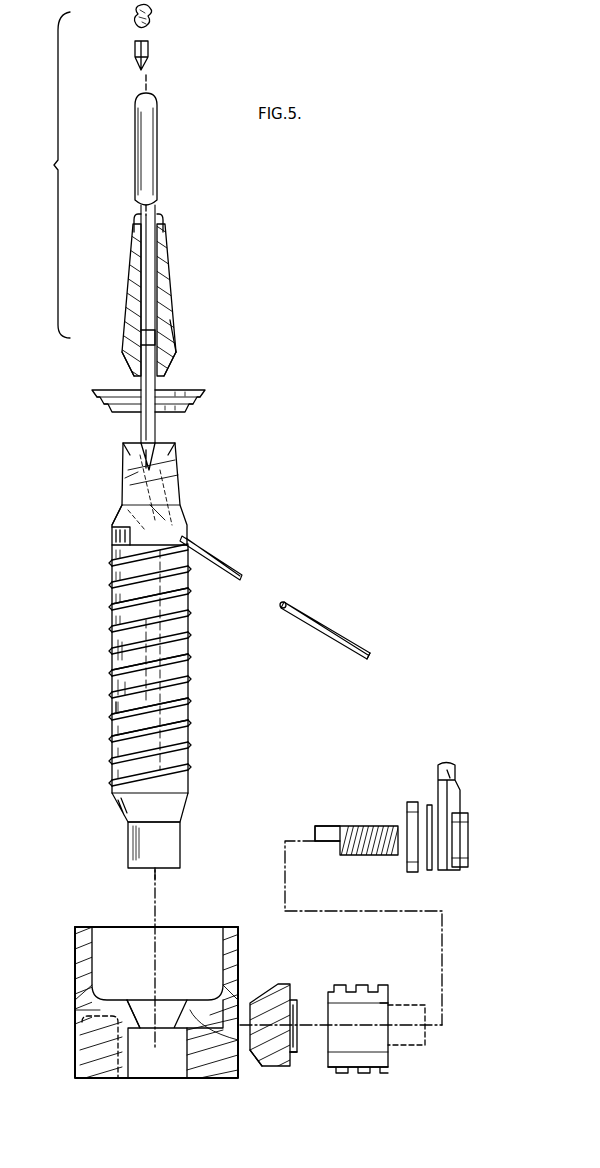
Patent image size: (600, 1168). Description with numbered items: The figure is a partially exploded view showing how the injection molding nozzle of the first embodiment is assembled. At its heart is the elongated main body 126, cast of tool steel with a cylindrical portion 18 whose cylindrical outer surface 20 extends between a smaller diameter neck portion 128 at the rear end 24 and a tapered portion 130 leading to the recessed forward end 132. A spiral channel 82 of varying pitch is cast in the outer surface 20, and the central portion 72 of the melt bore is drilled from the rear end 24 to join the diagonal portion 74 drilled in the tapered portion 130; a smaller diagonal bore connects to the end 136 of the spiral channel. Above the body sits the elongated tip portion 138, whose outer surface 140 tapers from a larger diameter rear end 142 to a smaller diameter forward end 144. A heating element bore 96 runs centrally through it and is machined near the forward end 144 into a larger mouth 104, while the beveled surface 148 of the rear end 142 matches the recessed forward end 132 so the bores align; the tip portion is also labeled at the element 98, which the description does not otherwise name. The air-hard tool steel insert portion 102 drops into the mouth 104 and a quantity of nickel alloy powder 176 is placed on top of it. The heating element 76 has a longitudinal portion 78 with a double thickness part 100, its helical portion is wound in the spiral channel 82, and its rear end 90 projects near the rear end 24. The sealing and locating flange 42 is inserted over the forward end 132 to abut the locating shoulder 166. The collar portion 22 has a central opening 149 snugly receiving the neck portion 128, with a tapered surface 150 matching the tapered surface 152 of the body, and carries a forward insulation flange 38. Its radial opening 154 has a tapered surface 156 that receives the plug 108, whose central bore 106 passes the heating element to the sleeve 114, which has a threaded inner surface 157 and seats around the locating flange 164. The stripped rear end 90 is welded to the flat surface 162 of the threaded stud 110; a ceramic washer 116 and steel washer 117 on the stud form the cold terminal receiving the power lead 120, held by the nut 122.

The nickel alloy powder 176 is at (152, 17).
The insert portion 102 is at (150, 52).
The double thickness part 100 is at (158, 152).
The mouth 104 is at (133, 218).
The forward end 144 is at (162, 222).
The left cone half 98 is at (128, 280).
The outer surface 140 is at (173, 290).
The tip portion 138 is at (174, 318).
The heating element bore 96 is at (152, 338).
The rear end 142 is at (128, 362).
The beveled surface 148 is at (167, 373).
The sealing and locating flange 42 is at (205, 402).
The tapered portion 130 is at (178, 485).
The forward end 132 is at (165, 447).
The diagonal portion 74 is at (122, 518).
The locating shoulder 166 is at (112, 537).
The end 136 is at (185, 538).
The cylindrical portion 18 is at (188, 635).
The longitudinal portion 78 is at (188, 607).
The outer surface 20 is at (190, 668).
The central portion 72 is at (148, 688).
The main body 126 is at (188, 704).
The spiral channel 82 is at (185, 727).
The tapered surface 152 is at (118, 808).
The neck portion 128 is at (130, 850).
The rear end 24 is at (146, 868).
The heating element 76 is at (348, 645).
The rear end 90 is at (370, 658).
The collar portion 22 is at (78, 1013).
The insulation flange 38 is at (70, 942).
The tapered surface 150 is at (123, 1000).
The central opening 149 is at (147, 1078).
The tapered surface 156 is at (240, 1052).
The plug 108 is at (280, 985).
The radial opening 154 is at (270, 1050).
The central bore 106 is at (300, 1052).
The sleeve 114 is at (340, 985).
The inner surface 157 is at (385, 1003).
The locating flange 164 is at (345, 1068).
The threaded stud 110 is at (375, 855).
The flat surface 162 is at (328, 841).
The ceramic washer 116 is at (407, 800).
The steel washer 117 is at (430, 800).
The power lead 120 is at (447, 768).
The nut 122 is at (460, 865).